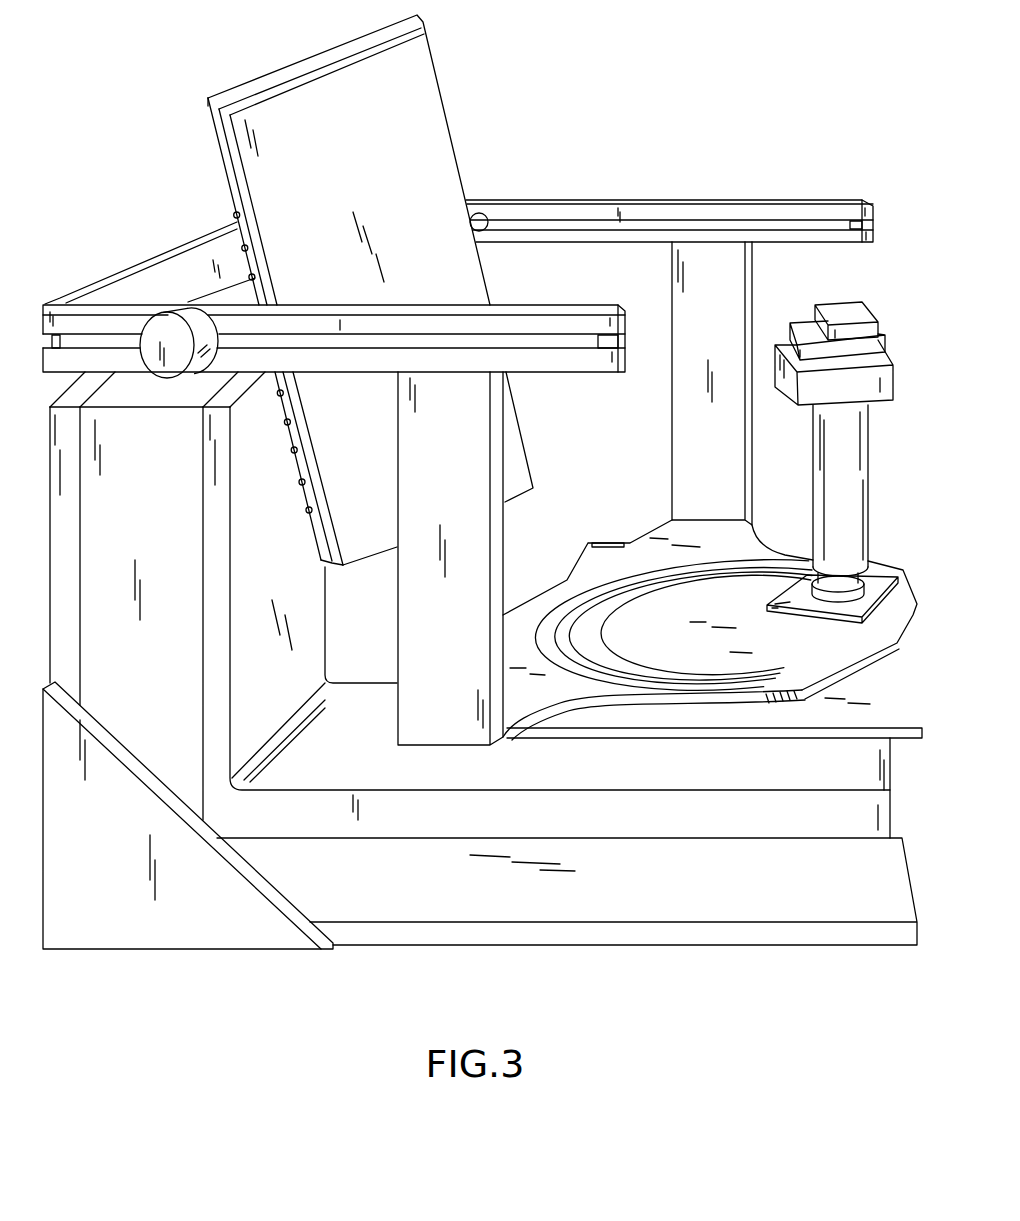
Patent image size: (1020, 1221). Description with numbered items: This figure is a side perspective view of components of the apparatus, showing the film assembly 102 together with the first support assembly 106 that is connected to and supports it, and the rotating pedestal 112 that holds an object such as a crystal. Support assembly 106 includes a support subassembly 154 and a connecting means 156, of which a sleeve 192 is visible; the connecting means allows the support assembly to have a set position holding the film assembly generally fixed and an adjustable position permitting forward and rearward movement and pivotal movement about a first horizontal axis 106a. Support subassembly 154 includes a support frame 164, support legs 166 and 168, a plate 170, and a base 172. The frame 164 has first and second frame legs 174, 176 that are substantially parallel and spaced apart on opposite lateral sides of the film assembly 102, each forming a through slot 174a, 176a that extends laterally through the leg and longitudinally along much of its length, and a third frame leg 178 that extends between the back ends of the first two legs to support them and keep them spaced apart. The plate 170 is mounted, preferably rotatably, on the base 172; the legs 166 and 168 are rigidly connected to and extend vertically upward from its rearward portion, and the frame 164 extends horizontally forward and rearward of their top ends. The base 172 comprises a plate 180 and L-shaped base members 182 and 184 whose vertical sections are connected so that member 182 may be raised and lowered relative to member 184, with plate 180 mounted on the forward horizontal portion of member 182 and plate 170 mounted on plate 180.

The film assembly 102 is at (452, 58).
The first support assembly 106 is at (120, 163).
The first horizontal axis 106a is at (840, 452).
The rotating pedestal 112 is at (877, 300).
The support subassembly 154 is at (113, 262).
The connecting means 156 is at (478, 192).
The support frame 164 is at (594, 195).
The support leg 166 is at (477, 551).
The support leg 168 is at (695, 420).
The plate 170 is at (675, 540).
The base 172 is at (352, 962).
The first frame leg 174 is at (458, 355).
The slot 174a is at (420, 332).
The second frame leg 176 is at (733, 200).
The through slot 176a is at (598, 232).
The third frame leg 178 is at (211, 257).
The plate 180 is at (865, 785).
The base member 182 is at (611, 845).
The base member 184 is at (165, 763).
The sleeve 192 is at (158, 366).